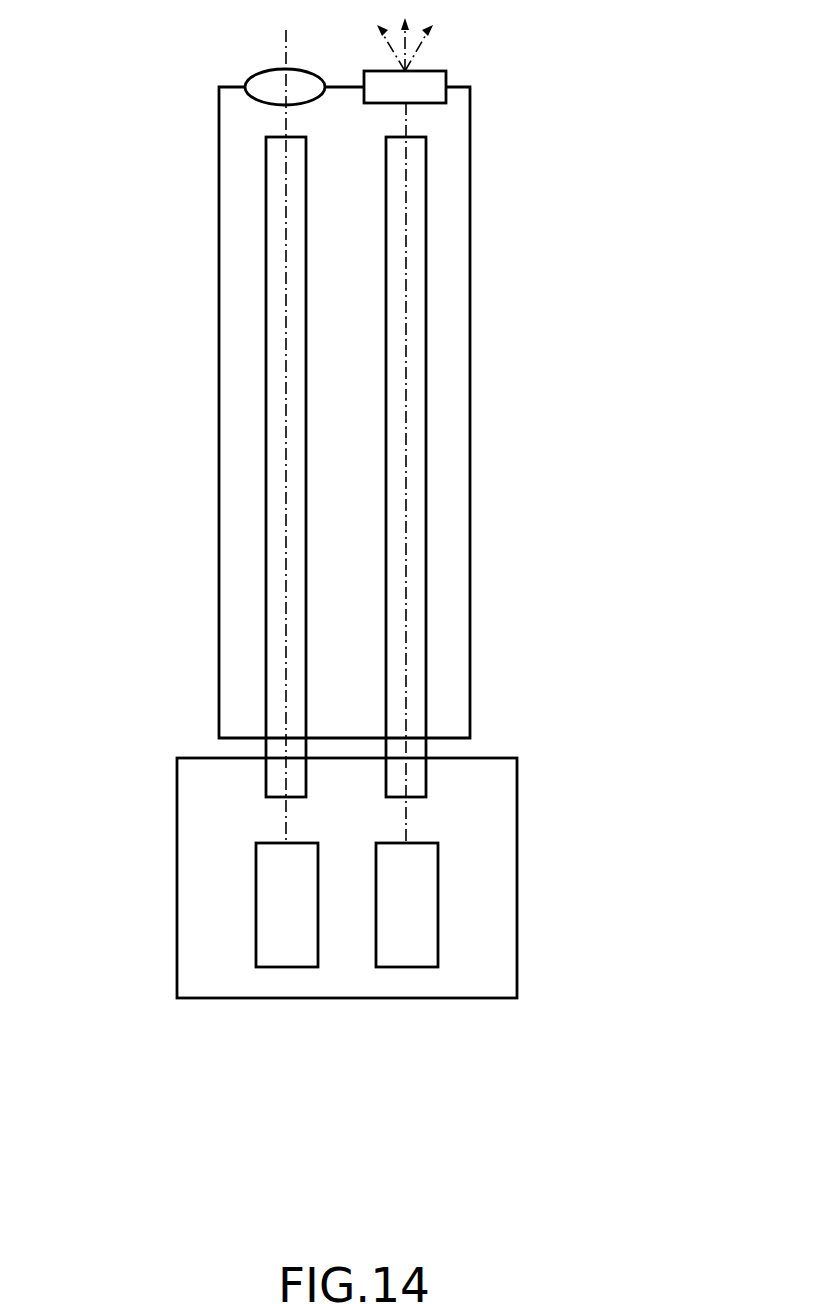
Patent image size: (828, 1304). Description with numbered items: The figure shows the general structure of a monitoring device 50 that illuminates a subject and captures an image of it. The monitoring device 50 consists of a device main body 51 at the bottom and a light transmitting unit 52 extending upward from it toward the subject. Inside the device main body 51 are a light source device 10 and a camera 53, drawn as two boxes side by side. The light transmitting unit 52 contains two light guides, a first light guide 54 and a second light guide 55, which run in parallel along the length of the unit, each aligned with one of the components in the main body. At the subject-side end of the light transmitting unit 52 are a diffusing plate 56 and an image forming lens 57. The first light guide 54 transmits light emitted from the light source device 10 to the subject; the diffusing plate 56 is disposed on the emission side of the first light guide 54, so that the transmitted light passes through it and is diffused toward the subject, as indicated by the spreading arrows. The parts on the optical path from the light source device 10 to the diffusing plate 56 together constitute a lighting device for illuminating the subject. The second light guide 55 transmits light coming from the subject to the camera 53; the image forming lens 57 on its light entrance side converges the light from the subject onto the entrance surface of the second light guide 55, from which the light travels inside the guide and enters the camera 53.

The light source device 10 is at (439, 907).
The monitoring device 50 is at (537, 128).
The device main body 51 is at (517, 788).
The light transmitting unit 52 is at (470, 412).
The camera 53 is at (255, 905).
The first light guide 54 is at (426, 302).
The second light guide 55 is at (266, 373).
The diffusing plate 56 is at (432, 70).
The image forming lens 57 is at (258, 75).